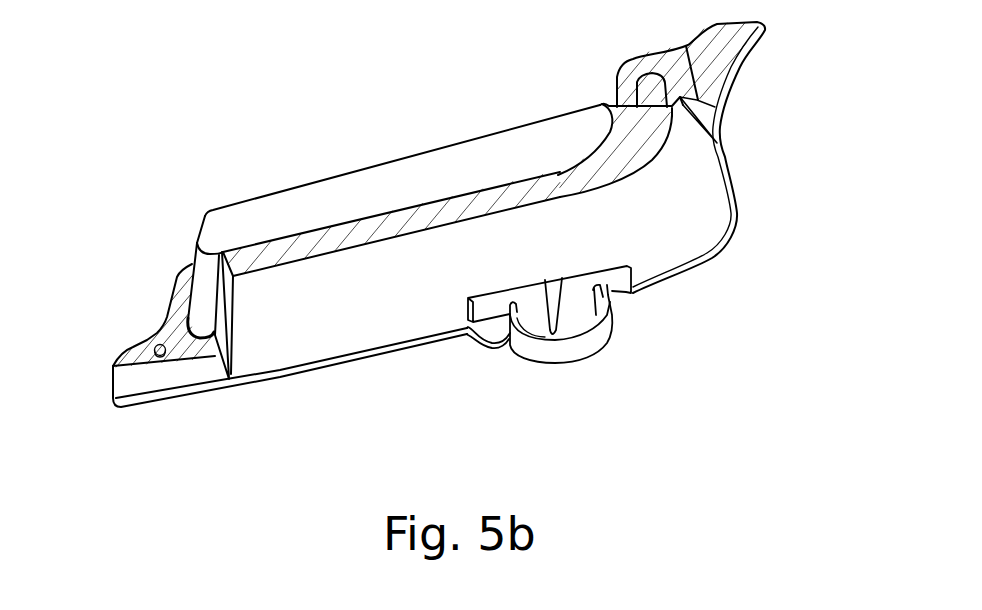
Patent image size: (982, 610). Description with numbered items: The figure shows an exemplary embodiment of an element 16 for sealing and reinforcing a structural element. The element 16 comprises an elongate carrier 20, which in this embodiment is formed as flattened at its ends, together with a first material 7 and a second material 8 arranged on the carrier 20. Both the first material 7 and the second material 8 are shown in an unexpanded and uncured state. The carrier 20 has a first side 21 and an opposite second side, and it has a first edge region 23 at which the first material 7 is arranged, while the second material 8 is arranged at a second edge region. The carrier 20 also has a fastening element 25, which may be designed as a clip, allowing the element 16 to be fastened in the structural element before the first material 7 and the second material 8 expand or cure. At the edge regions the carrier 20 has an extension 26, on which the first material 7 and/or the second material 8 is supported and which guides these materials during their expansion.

The element for sealing and reinforcing a structural element 16 is at (263, 140).
The carrier 20 is at (313, 201).
The first side 21 is at (522, 169).
The first edge region 23 is at (393, 208).
The first material 7 is at (693, 203).
The second material 8 is at (172, 328).
The fastening element 25 is at (567, 325).
The extension 26 is at (412, 343).